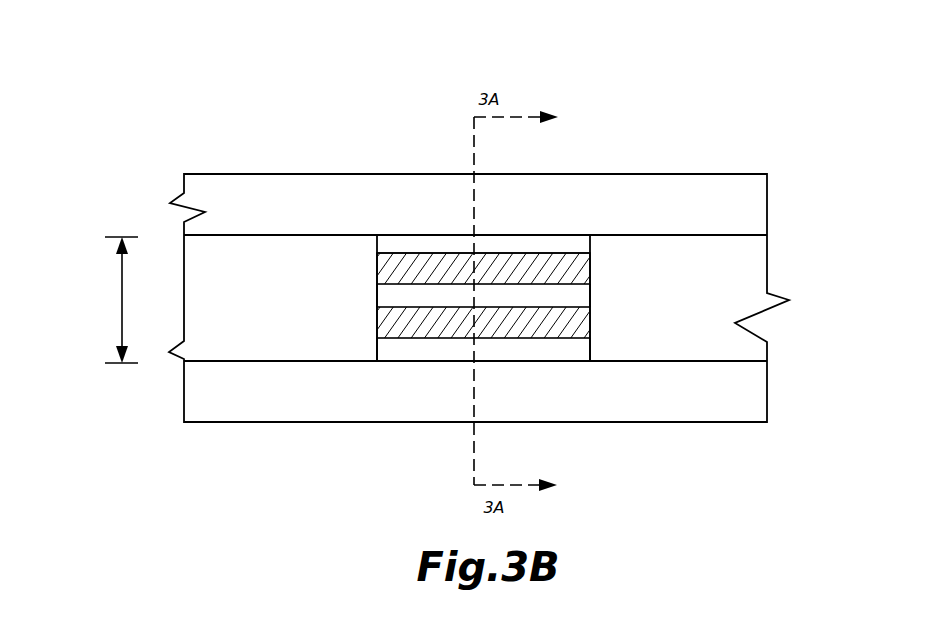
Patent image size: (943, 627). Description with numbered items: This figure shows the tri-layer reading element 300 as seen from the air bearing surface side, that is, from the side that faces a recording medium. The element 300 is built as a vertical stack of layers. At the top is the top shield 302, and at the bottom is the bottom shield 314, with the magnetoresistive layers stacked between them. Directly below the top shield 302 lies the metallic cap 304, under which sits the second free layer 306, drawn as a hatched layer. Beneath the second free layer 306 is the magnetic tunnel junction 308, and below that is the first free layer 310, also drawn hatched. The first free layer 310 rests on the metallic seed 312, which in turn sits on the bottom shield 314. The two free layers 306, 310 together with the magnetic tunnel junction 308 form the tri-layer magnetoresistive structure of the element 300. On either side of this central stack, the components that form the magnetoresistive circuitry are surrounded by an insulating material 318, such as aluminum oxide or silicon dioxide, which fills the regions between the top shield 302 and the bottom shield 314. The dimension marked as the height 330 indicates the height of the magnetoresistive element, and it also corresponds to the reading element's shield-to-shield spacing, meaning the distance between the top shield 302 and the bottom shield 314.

The tri-layer reading element 300 is at (716, 90).
The top shield 302 is at (453, 183).
The metallic cap 304 is at (458, 245).
The second free layer 306 is at (438, 267).
The magnetic tunnel junction 308 is at (393, 298).
The first free layer 310 is at (385, 332).
The metallic seed 312 is at (461, 349).
The bottom shield 314 is at (462, 408).
The insulating material 318 is at (479, 298).
The height 330 is at (122, 302).